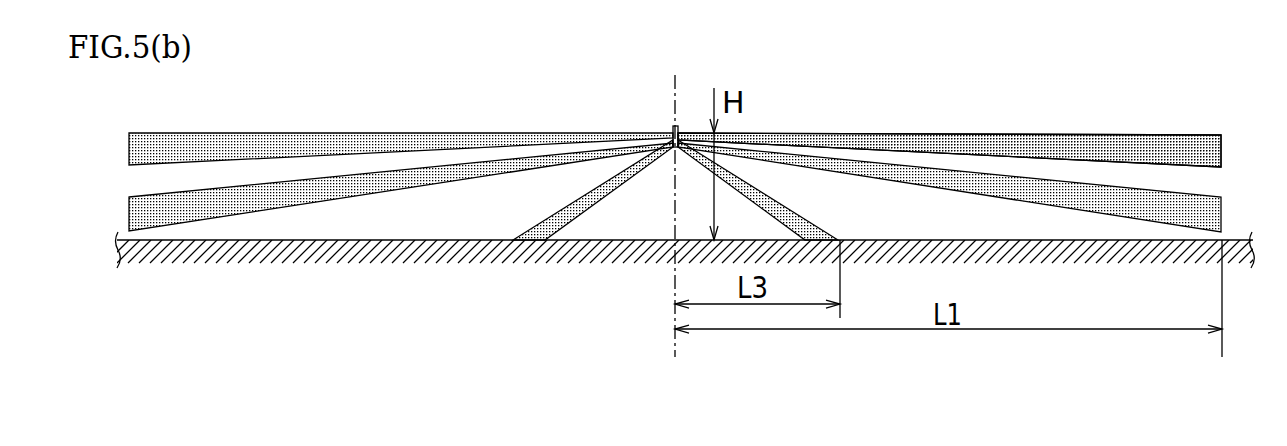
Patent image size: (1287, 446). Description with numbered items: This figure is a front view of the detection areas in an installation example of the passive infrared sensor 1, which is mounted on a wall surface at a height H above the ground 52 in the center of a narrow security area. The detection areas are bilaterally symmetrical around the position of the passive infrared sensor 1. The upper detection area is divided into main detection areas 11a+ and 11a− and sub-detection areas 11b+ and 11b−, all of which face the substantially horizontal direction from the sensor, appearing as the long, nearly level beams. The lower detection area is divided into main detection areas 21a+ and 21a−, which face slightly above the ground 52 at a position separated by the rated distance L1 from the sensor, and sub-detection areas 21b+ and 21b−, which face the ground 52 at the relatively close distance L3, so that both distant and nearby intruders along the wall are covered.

The ground 52 is at (435, 240).
The passive infrared sensor 1 is at (671, 128).
The main detection areas of the upper detection area 11a is at (1070, 148).
The sub-detection areas of the upper detection area 11b is at (950, 120).
The main detection areas of the lower detection area 21a is at (925, 177).
The sub-detection areas of the lower detection area 21b is at (777, 207).